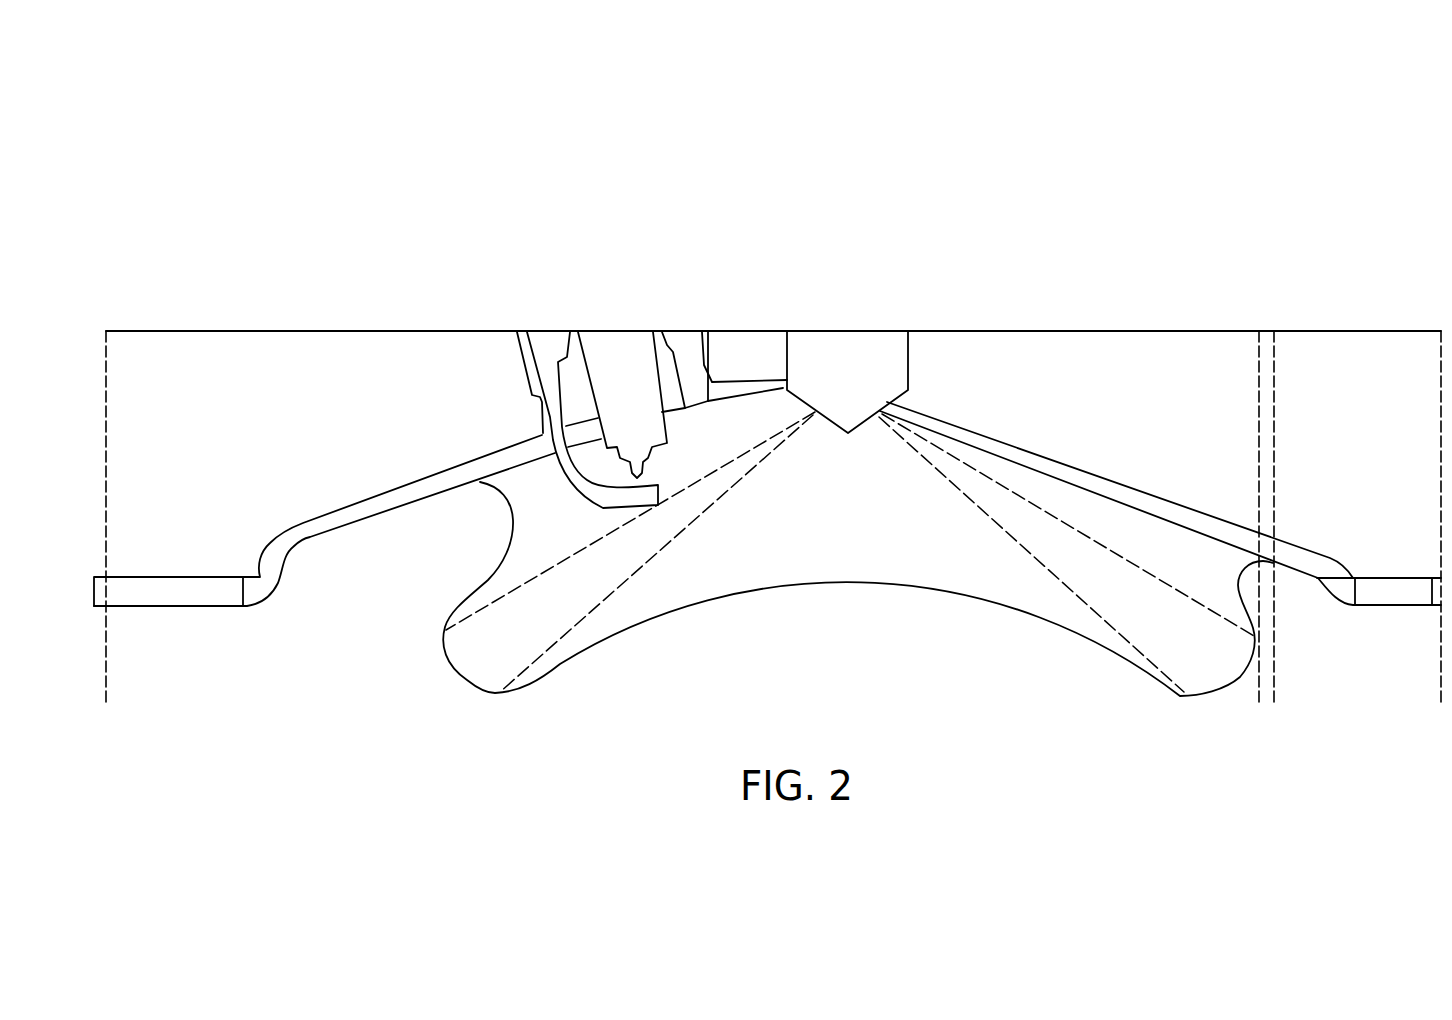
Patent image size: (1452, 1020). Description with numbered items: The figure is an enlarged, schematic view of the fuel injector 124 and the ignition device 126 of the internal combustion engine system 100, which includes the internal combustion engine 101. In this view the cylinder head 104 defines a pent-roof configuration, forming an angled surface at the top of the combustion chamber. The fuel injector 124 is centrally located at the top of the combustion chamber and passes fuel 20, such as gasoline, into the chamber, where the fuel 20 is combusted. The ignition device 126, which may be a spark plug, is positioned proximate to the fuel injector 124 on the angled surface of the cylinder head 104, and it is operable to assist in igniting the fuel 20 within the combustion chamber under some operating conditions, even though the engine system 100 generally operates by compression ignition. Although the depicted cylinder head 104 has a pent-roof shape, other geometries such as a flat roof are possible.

The internal combustion engine system 100 is at (773, 198).
The internal combustion engine 101 is at (773, 424).
The cylinder head 104 is at (360, 514).
The fuel injector 124 is at (847, 344).
The ignition device 126 is at (615, 344).
The fuel 20 is at (1105, 630).